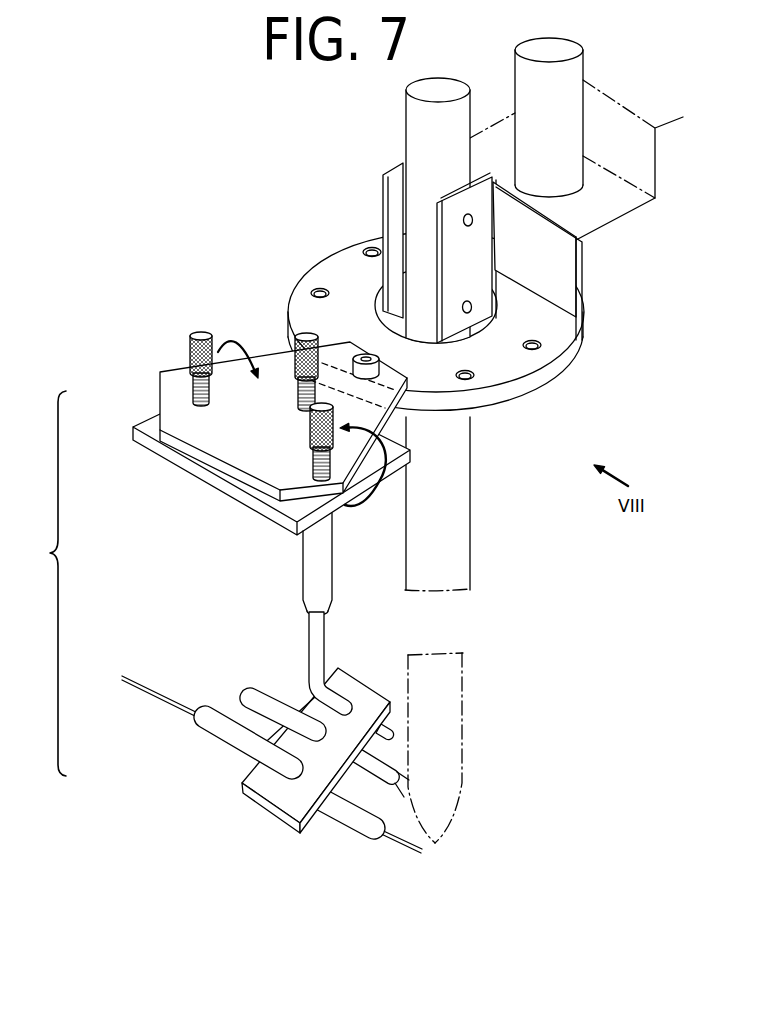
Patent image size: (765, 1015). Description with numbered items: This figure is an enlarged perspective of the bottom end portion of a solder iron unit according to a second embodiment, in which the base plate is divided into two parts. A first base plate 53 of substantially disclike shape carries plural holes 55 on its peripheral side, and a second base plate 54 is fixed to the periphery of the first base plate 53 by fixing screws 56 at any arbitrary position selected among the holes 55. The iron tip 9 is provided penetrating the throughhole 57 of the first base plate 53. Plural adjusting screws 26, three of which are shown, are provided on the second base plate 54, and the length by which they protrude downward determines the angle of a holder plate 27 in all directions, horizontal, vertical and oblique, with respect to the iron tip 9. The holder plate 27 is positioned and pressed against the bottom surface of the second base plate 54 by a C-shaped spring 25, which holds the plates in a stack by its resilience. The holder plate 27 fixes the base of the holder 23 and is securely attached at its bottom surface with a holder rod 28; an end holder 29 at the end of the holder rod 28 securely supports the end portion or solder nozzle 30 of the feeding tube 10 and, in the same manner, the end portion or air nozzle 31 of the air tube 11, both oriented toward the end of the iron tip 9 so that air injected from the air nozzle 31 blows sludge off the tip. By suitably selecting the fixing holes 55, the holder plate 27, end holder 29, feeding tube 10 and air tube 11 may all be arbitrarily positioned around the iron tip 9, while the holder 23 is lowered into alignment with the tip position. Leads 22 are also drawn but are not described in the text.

The iron tip 9 is at (450, 803).
The feeding tube 10 is at (217, 737).
The air tube 11 is at (250, 688).
The wire lead 22 is at (157, 690).
The holder 23 is at (42, 583).
The spring 25 is at (233, 335).
The screws 26 is at (190, 350).
The holder plate 27 is at (183, 468).
The holder rod 28 is at (327, 588).
The end holder 29 is at (362, 680).
The end portion (solder nozzle) 30 is at (348, 810).
The end portion (air nozzle) 31 is at (388, 786).
The first base plate 53 is at (493, 373).
The second base plate 54 is at (168, 383).
The holes 55 is at (541, 346).
The fixing screws 56 is at (366, 355).
The throughhole 57 is at (477, 330).